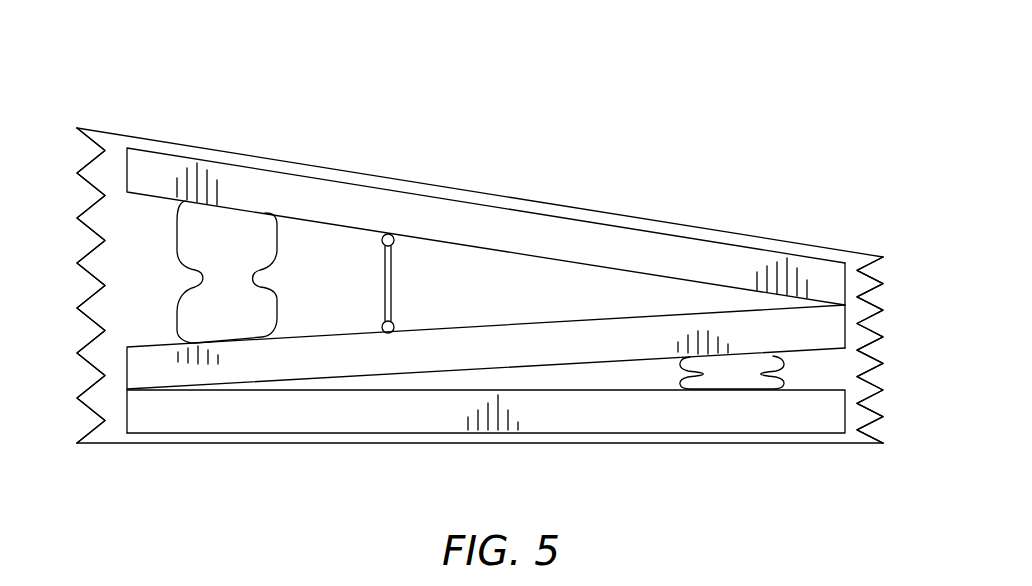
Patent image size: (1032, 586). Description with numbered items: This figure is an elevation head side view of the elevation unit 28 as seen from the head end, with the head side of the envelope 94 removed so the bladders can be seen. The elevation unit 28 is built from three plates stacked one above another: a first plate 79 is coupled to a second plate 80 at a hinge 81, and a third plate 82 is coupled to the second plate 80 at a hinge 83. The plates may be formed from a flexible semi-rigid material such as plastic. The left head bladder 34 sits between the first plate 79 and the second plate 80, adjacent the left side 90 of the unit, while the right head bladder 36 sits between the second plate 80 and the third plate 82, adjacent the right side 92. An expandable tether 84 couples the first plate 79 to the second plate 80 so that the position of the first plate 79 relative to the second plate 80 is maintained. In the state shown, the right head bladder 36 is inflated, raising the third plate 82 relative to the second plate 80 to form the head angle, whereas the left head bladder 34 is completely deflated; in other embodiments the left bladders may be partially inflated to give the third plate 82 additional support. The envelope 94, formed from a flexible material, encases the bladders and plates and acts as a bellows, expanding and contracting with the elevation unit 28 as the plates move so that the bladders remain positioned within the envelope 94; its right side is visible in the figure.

The elevation unit 28 is at (386, 96).
The left head bladder 34 is at (727, 375).
The right head bladder 36 is at (228, 222).
The first plate 79 is at (578, 423).
The second plate 80 is at (440, 347).
The hinge 81 is at (125, 423).
The third plate 82 is at (540, 230).
The hinge 83 is at (866, 304).
The expandable tether 84 is at (393, 255).
The left side 90 is at (894, 370).
The right side 92 is at (62, 362).
The envelope 94 is at (87, 253).